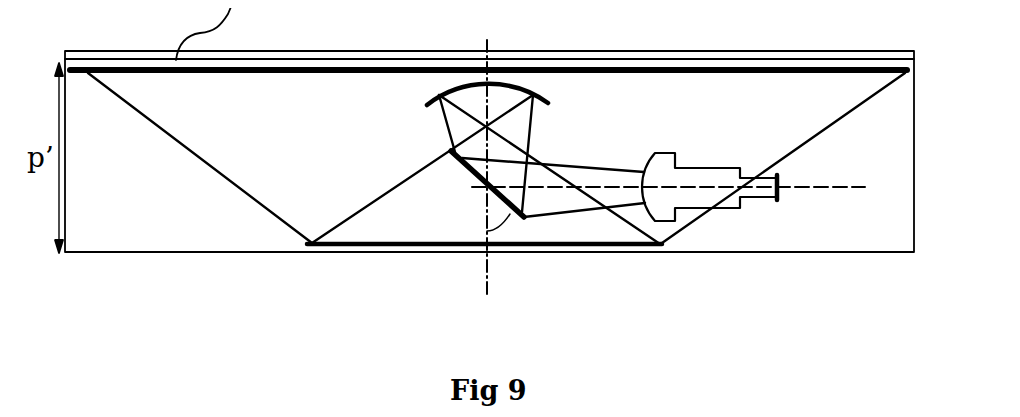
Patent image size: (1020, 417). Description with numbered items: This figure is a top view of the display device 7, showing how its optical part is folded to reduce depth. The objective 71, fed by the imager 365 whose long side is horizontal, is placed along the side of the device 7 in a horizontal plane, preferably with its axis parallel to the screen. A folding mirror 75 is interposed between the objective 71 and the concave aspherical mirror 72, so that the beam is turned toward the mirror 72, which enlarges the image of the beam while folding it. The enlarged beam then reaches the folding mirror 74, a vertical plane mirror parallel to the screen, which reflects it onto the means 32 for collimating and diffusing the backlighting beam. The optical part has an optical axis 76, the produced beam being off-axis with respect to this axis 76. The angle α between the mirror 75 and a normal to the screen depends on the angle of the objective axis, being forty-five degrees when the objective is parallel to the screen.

The display device 7 is at (170, 252).
The means for collimating and diffusing the backlighting beam 32 is at (745, 70).
The concave aspherical mirror 72 is at (463, 85).
The folding mirror 74 is at (345, 252).
The folding mirror 75 is at (463, 168).
The objective 71 is at (725, 252).
The imager 365 is at (787, 252).
The optical axis 76 is at (488, 280).